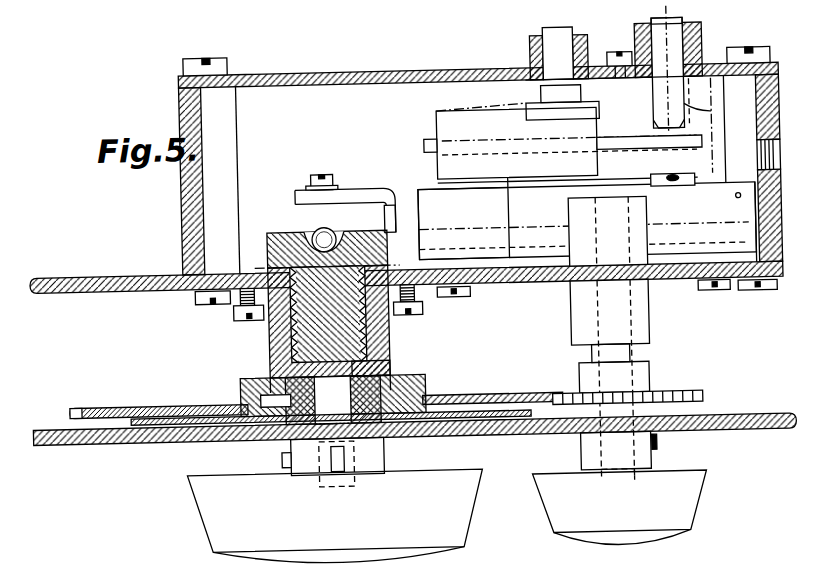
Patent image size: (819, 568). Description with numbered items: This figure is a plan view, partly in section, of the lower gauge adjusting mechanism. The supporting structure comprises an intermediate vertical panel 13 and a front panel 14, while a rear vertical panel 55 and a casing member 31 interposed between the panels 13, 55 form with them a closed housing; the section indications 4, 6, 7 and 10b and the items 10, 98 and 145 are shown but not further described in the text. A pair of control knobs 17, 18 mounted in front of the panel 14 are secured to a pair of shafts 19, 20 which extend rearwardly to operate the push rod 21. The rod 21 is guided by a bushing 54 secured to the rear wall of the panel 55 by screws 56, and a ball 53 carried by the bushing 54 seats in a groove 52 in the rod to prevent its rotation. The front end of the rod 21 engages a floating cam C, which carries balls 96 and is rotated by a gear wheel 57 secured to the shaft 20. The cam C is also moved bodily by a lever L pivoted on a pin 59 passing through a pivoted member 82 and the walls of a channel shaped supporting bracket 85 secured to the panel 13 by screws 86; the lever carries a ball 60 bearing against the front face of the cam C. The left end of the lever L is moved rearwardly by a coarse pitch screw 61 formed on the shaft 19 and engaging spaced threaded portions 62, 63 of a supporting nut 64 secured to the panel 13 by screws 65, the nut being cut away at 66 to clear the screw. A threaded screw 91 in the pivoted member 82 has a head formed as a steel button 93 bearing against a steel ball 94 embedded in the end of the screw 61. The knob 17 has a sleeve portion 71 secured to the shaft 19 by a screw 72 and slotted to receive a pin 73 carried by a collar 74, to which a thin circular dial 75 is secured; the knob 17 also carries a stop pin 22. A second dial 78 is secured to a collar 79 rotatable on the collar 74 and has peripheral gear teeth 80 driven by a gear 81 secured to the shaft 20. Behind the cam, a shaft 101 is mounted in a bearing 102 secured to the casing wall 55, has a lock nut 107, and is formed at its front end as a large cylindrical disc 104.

The rear vertical panel 55 is at (318, 69).
The casing member 31 is at (195, 188).
The ball 53 is at (740, 60).
The vent slots 145 is at (762, 160).
The pivot pin 59 is at (741, 198).
The intermediate vertical panel 13 is at (82, 277).
The front panel 14 is at (72, 432).
The cylinder 10 is at (669, 70).
The bushing 54 is at (700, 37).
The screws 56 is at (640, 61).
The bearing 102 is at (538, 55).
The shaft 101 is at (545, 95).
The push rod 21 is at (660, 90).
The balls 96 is at (658, 120).
The lock nut 107 is at (540, 120).
The gear wheel 57 is at (545, 153).
The channel shaped supporting bracket 85 is at (437, 146).
The floating cam C is at (428, 117).
The lever L is at (378, 181).
The large cylindrical disc 104 is at (550, 196).
The groove 52 is at (700, 102).
The cam 98 is at (695, 125).
The ball 60 is at (672, 182).
The pivoted member 82 is at (400, 190).
The threaded screw 91 is at (322, 173).
The threaded portion 63 is at (388, 236).
The supporting nut 64 is at (268, 245).
The steel ball 94 is at (312, 224).
The steel button 93 is at (337, 220).
The coarse pitch screw 61 is at (270, 323).
The cut away central portion 66 is at (385, 320).
The threaded portion 62 is at (385, 345).
The screws 65 is at (235, 308).
The screws 86 is at (455, 298).
The collar 74 is at (265, 372).
The collar 79 is at (410, 374).
The pin 73 is at (320, 400).
The second dial 78 is at (100, 400).
The gear teeth 80 is at (70, 399).
The thin circular dial 75 is at (137, 419).
The shaft 19 is at (380, 440).
The sleeve portion 71 is at (375, 464).
The screw 72 is at (280, 449).
The stop pin 22 is at (333, 470).
The shaft 20 is at (600, 355).
The gear 81 is at (685, 398).
The control knob 17 is at (207, 526).
The control knob 18 is at (545, 511).
The section line 6 is at (175, 272).
The section line 4 is at (233, 241).
The section line 7 is at (235, 393).
The section line 10 10b is at (663, 307).